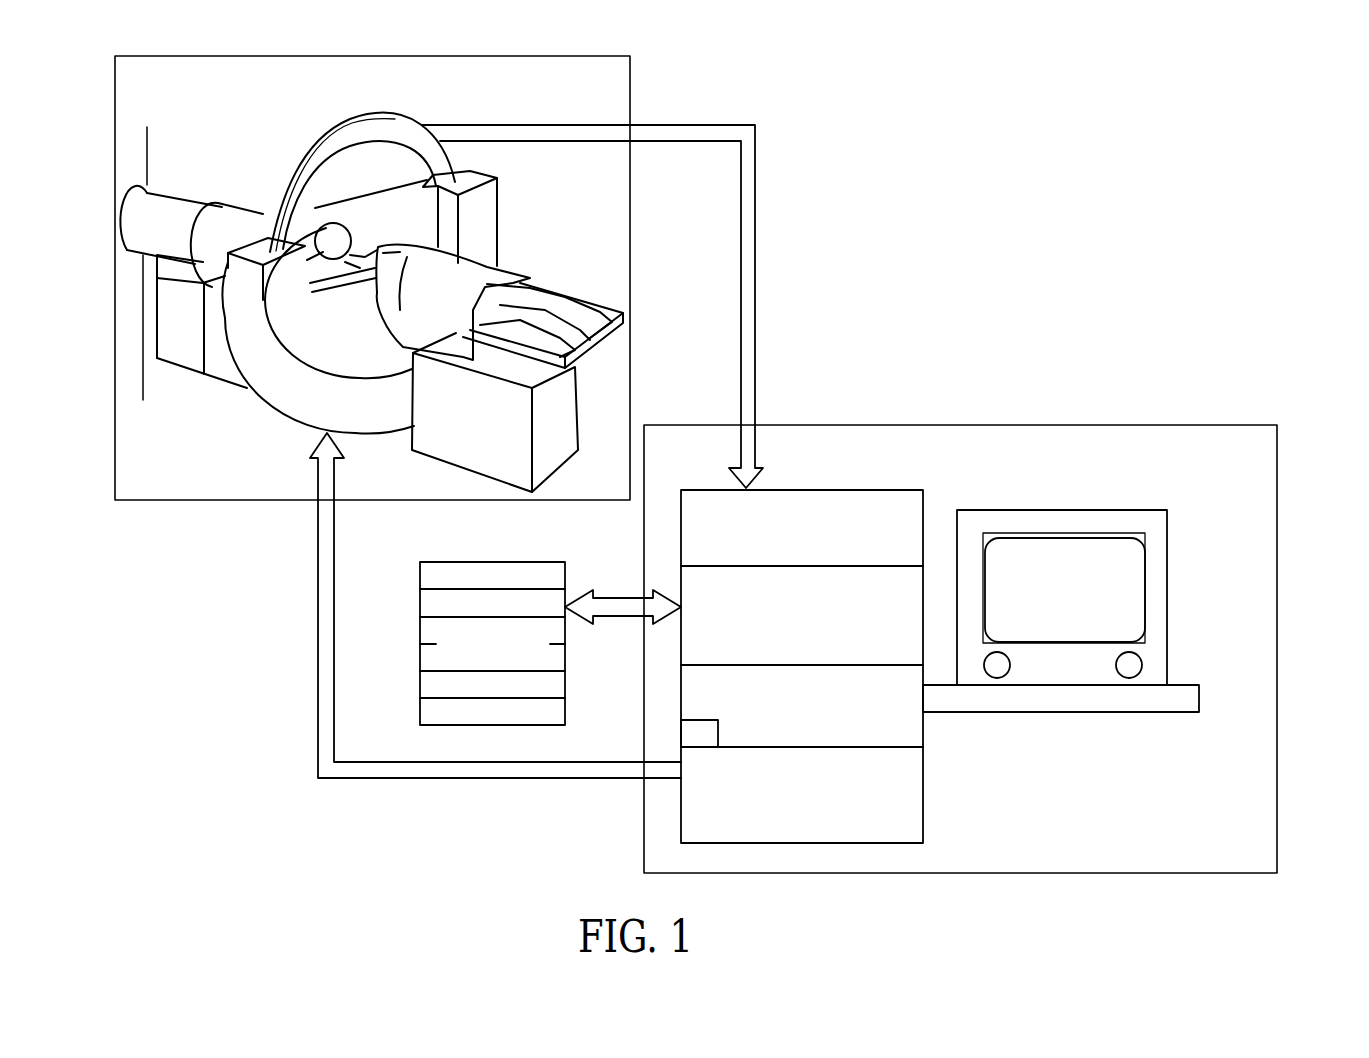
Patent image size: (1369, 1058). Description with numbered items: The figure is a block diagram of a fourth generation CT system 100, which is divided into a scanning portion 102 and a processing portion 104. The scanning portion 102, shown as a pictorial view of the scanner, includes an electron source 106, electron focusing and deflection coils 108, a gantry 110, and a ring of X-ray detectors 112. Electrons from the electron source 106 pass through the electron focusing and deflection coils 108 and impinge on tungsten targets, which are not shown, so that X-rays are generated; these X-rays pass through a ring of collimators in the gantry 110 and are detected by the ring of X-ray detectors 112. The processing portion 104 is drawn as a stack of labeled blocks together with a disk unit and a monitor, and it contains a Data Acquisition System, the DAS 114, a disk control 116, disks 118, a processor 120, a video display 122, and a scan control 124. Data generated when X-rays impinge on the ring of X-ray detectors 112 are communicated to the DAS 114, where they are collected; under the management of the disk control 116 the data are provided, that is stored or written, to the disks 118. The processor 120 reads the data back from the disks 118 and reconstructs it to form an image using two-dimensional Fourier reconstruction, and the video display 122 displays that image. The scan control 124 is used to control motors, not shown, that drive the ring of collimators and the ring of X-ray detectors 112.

The fourth generation CT system 100 is at (182, 598).
The scanning portion 102 is at (630, 74).
The processing portion 104 is at (1277, 507).
The electron source 106 is at (169, 197).
The electron focusing and deflection coils 108 is at (239, 204).
The gantry 110 is at (253, 400).
The ring of X-ray detectors 112 is at (405, 115).
The Data Acquisition System (DAS) 114 is at (927, 510).
The disk control 116 is at (677, 638).
The disks 118 is at (480, 558).
The processor 120 is at (923, 738).
The video display 122 is at (1167, 595).
The scan control 124 is at (923, 828).